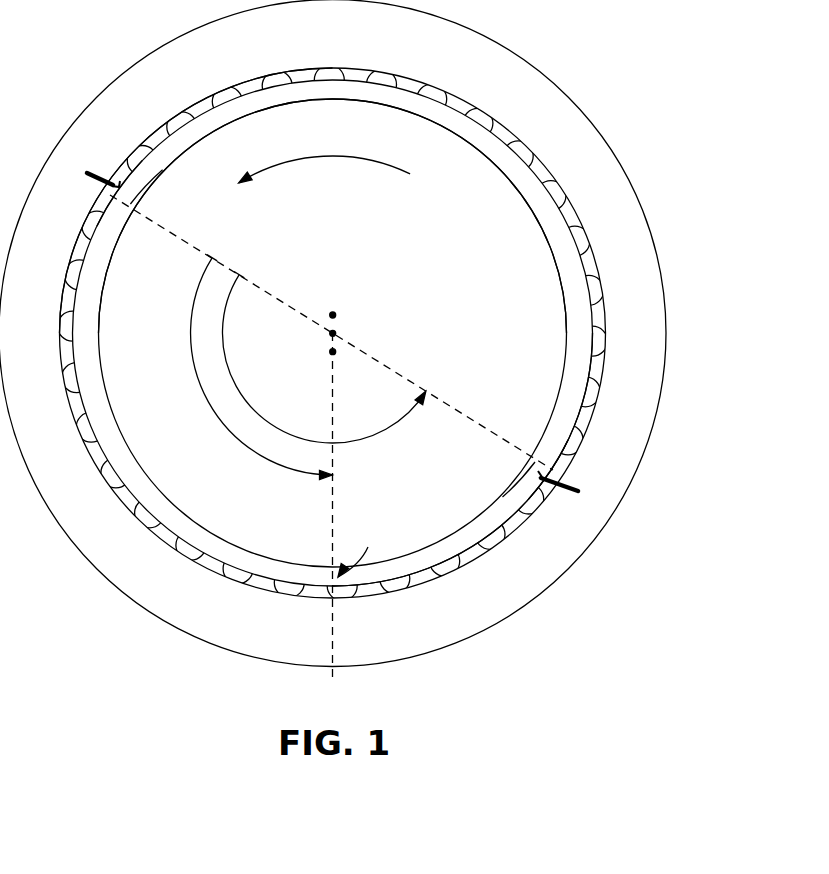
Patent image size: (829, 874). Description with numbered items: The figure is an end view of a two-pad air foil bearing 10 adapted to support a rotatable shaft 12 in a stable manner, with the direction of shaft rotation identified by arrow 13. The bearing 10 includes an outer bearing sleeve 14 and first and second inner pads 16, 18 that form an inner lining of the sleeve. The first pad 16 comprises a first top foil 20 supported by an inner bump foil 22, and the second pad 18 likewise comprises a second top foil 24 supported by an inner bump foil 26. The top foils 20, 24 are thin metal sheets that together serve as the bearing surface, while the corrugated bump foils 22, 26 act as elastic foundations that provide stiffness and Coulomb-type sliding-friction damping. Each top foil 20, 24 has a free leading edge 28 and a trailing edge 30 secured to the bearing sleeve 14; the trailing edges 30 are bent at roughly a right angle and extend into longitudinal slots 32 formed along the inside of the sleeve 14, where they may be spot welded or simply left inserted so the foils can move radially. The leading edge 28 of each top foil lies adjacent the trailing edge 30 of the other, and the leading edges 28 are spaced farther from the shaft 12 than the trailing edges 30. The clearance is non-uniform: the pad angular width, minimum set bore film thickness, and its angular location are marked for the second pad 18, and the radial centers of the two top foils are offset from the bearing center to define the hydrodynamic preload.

The air foil bearing 10 is at (640, 74).
The rotatable shaft 12 is at (492, 304).
The arrow 13 is at (325, 163).
The outer bearing sleeve 14 is at (616, 190).
The first inner pad 16 is at (496, 118).
The second inner pad 18 is at (160, 545).
The first top foil 20 is at (512, 160).
The inner bump foil 22 is at (278, 78).
The second top foil 24 is at (240, 563).
The inner bump foil 26 is at (437, 573).
The free leading edge 28 is at (106, 203).
The trailing edge 30 is at (137, 185).
The longitudinal slots 32 is at (100, 168).